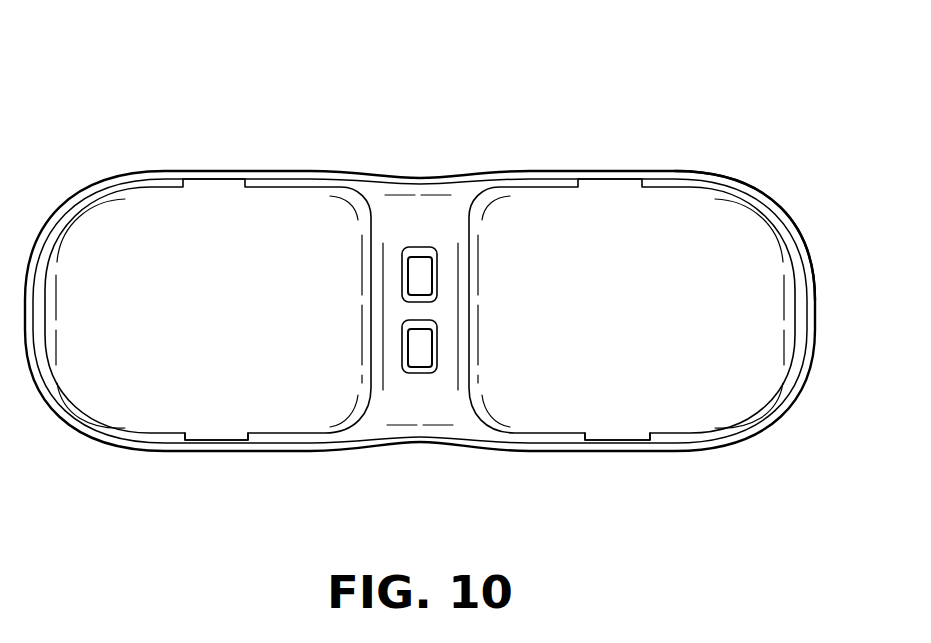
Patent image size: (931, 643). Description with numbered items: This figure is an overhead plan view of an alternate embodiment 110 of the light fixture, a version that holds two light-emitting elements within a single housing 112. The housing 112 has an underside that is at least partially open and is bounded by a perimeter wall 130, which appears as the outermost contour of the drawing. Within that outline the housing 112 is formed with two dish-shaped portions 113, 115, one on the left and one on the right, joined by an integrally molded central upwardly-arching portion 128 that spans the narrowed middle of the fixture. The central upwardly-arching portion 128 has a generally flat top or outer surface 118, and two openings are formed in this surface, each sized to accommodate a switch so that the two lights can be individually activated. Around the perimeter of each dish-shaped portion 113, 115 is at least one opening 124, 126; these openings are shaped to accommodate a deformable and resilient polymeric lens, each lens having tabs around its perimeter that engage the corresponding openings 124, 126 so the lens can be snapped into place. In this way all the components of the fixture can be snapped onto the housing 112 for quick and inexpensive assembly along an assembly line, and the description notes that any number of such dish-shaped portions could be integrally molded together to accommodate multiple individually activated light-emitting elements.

The alternate embodiment of the light fixture 110 is at (495, 107).
The housing 112 is at (770, 163).
The dish-shaped portion 113 is at (163, 152).
The dish-shaped portion 115 is at (534, 160).
The flat top or outer surface 118 is at (411, 172).
The opening 124 is at (209, 437).
The opening 126 is at (624, 440).
The central upwardly-arching portion 128 is at (421, 407).
The perimeter wall 130 is at (803, 252).